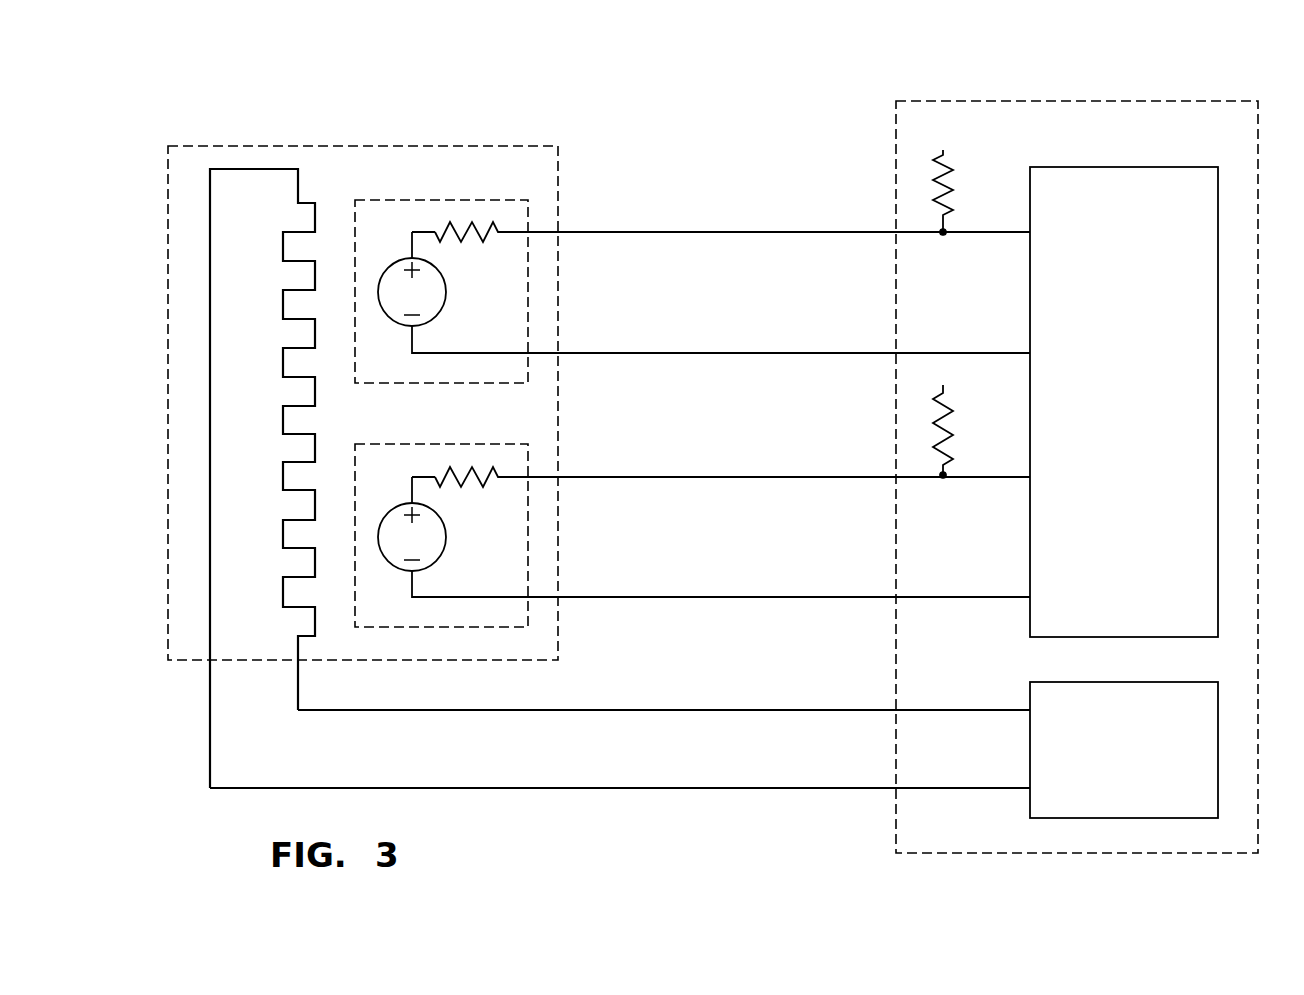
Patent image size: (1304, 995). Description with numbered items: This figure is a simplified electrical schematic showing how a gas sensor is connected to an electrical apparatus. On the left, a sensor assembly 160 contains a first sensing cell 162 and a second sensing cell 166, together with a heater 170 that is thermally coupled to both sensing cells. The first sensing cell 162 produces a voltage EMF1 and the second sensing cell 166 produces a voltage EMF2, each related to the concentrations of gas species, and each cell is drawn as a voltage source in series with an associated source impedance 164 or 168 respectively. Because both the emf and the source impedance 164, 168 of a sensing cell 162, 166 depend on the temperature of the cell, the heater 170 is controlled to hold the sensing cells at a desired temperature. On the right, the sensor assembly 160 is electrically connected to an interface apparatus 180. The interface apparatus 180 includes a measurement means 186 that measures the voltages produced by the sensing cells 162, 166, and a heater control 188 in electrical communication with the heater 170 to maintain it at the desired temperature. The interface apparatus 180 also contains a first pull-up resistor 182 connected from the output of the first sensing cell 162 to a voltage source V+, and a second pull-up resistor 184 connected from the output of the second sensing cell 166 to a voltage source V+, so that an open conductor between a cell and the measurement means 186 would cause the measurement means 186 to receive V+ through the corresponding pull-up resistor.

The sensor assembly 160 is at (168, 215).
The first sensing cell 162 is at (659, 242).
The source impedance 164 is at (457, 222).
The second sensing cell 166 is at (692, 574).
The source impedance 168 is at (477, 470).
The heater 170 is at (290, 607).
The interface apparatus 180 is at (1067, 458).
The first pull-up resistor 182 is at (948, 175).
The second pull-up resistor 184 is at (947, 428).
The measurement means 186 is at (1218, 180).
The heater control 188 is at (1218, 697).